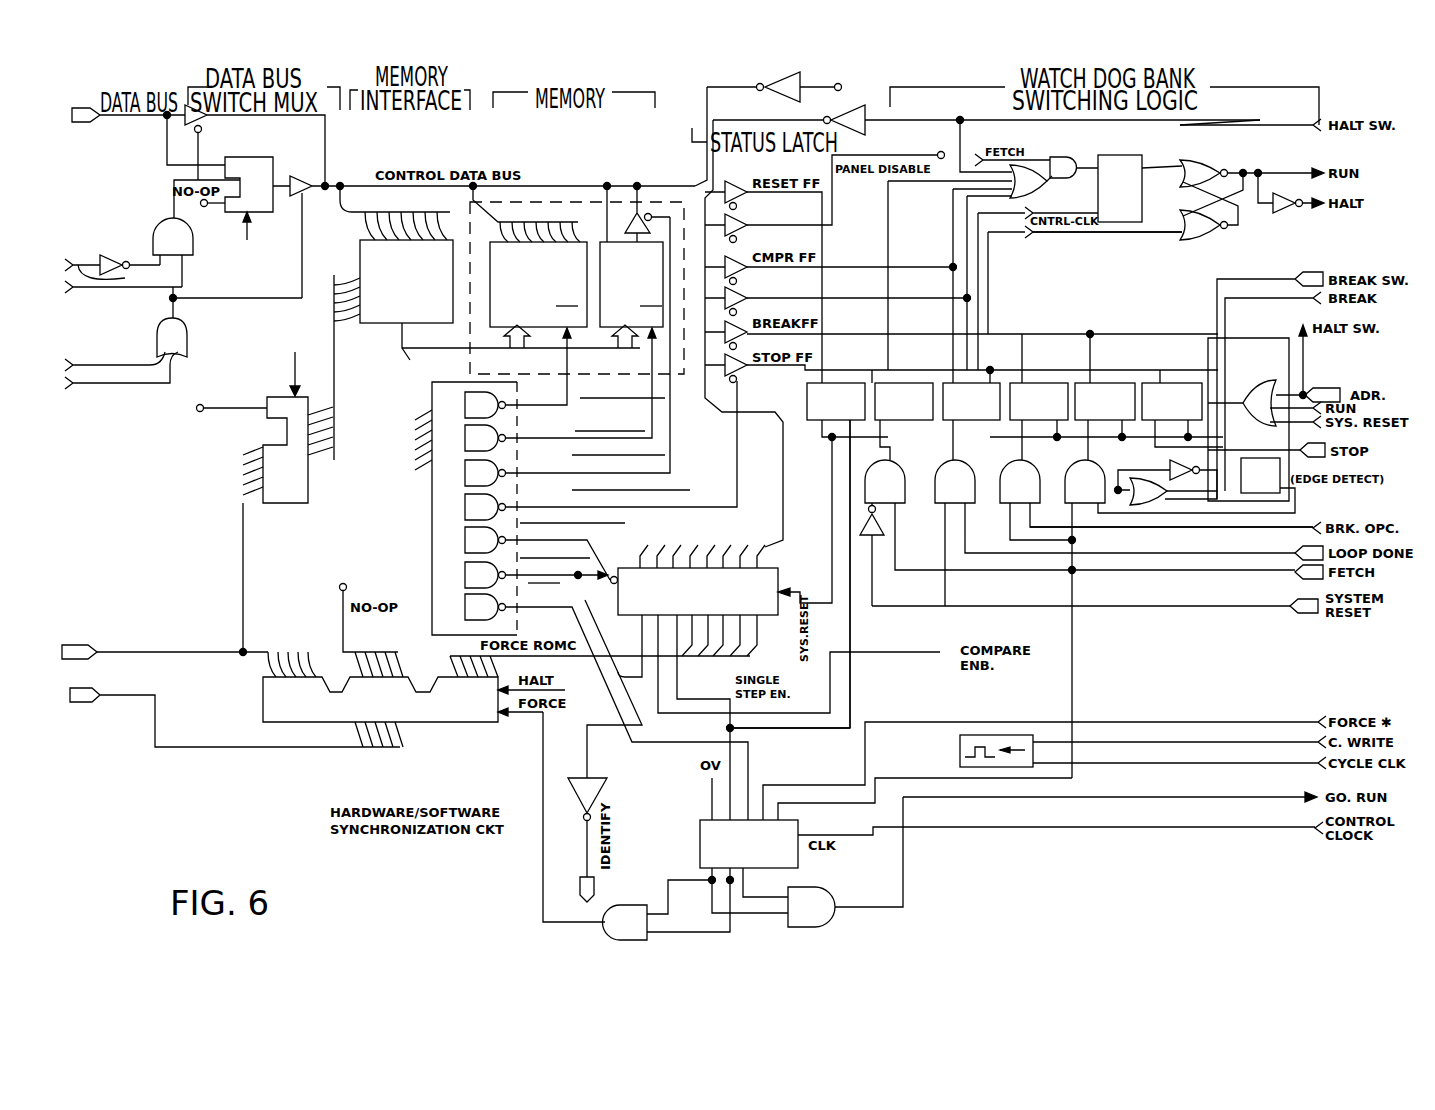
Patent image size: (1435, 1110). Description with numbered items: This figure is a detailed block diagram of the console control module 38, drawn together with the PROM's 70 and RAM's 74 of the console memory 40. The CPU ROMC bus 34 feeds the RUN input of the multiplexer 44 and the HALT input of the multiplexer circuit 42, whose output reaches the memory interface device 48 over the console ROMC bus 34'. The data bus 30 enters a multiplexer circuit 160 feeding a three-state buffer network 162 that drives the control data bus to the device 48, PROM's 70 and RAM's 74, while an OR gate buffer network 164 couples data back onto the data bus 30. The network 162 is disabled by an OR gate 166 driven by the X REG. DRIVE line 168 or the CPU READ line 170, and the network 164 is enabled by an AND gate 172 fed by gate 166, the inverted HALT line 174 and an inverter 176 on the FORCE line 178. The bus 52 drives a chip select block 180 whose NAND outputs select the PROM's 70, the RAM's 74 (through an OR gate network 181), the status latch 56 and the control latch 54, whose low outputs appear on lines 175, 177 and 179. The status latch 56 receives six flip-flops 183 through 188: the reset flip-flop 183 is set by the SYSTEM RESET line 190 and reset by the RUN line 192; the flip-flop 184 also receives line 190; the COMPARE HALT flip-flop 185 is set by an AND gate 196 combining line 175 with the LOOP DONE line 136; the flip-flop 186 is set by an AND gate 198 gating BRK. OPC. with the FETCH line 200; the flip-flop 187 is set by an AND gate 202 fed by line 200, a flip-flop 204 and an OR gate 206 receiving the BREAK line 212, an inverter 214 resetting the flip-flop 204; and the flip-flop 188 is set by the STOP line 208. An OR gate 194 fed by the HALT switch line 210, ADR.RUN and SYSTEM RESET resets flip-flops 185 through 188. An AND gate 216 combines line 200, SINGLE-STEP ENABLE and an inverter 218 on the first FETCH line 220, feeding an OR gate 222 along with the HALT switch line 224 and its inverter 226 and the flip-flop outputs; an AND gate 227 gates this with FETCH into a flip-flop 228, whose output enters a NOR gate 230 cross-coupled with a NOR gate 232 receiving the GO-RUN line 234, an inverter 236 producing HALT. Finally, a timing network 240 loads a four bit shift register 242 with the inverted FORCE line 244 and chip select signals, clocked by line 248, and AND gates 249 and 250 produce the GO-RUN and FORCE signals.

The data bus 30 is at (95, 112).
The CPU ROMC bus 34 is at (189, 602).
The console ROMC bus 34' is at (330, 363).
The console control module 38 is at (185, 549).
The console memory 40 is at (684, 377).
The multiplexer circuit 42 is at (308, 480).
The multiplexer 44 is at (424, 685).
The memory interface device 48 is at (418, 297).
The bus 52 is at (400, 347).
The control latch 54 is at (778, 552).
The status latch 56 is at (875, 97).
The PROM's 70 is at (538, 299).
The RAM's 74 is at (648, 299).
The line 136 is at (1125, 556).
The multiplexer circuit 160 is at (268, 156).
The three-state buffer network 162 is at (312, 172).
The OR gate buffer network 164 is at (190, 105).
The OR gate 166 is at (189, 340).
The line 168 is at (186, 363).
The line 170 is at (170, 400).
The AND gate 172 is at (173, 252).
The line 174 is at (169, 298).
The line 175 is at (688, 720).
The inverter 176 is at (118, 250).
The line 177 is at (622, 668).
The line 178 is at (80, 268).
The line 179 is at (680, 692).
The chip select block 180 is at (431, 484).
The OR gate network 181 is at (640, 210).
The reset flip-flop 183 is at (858, 382).
The flip-flop 184 is at (925, 360).
The COMPARE HALT flip-flop 185 is at (978, 360).
The flip-flop 186 is at (1058, 360).
The flip-flop 187 is at (1123, 360).
The flip-flop 188 is at (1190, 382).
The line 190 is at (1260, 610).
The line 192 is at (850, 695).
The OR gate 194 is at (1268, 372).
The AND gate 196 is at (955, 481).
The AND gate 198 is at (1020, 481).
The line 200 is at (1200, 572).
The AND gate 202 is at (1085, 619).
The flip-flop 204 is at (1282, 490).
The OR gate 206 is at (1148, 491).
The line 208 is at (1270, 452).
The line 210 is at (1305, 392).
The line 212 is at (1275, 320).
The inverter 214 is at (1170, 468).
The AND gate 216 is at (885, 481).
The inverter 218 is at (882, 526).
The line 220 is at (1074, 657).
The OR gate 222 is at (1022, 196).
The line 224 is at (1282, 120).
The inverter 226 is at (878, 140).
The AND gate 227 is at (1058, 158).
The flip-flop 228 is at (1112, 156).
The NOR gate 230 is at (1212, 150).
The NOR gate 232 is at (1212, 240).
The line 234 is at (1150, 234).
The inverter 236 is at (1290, 215).
The timing network 240 is at (1032, 734).
The four bit shift register 242 is at (698, 858).
The line 244 is at (1140, 720).
The line 248 is at (1148, 826).
The AND gate 249 is at (807, 862).
The AND gate 250 is at (668, 904).